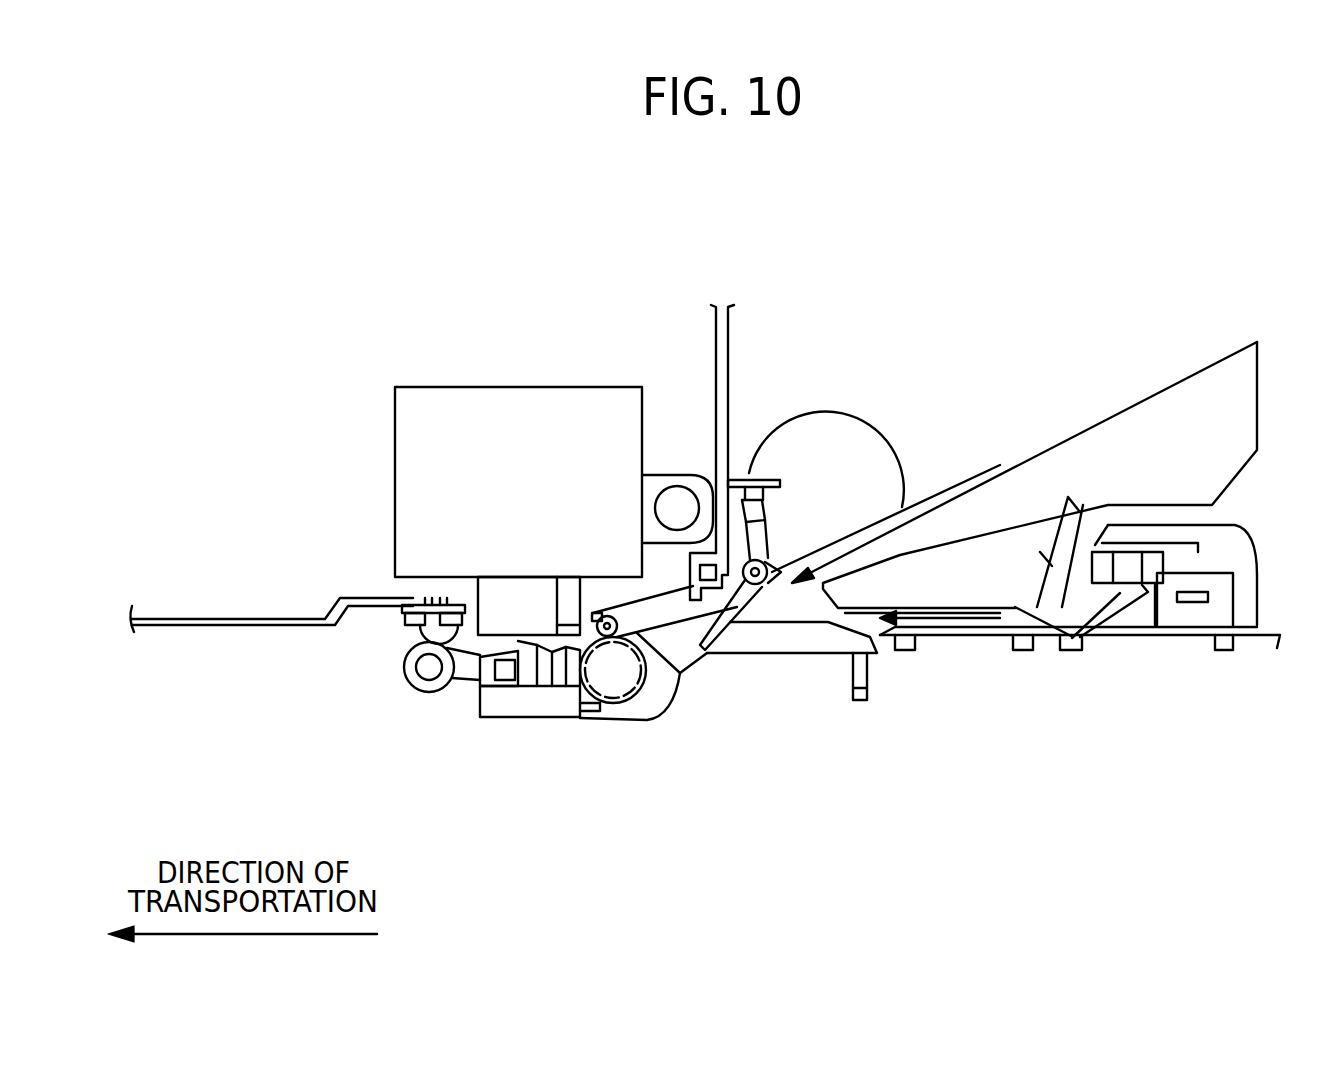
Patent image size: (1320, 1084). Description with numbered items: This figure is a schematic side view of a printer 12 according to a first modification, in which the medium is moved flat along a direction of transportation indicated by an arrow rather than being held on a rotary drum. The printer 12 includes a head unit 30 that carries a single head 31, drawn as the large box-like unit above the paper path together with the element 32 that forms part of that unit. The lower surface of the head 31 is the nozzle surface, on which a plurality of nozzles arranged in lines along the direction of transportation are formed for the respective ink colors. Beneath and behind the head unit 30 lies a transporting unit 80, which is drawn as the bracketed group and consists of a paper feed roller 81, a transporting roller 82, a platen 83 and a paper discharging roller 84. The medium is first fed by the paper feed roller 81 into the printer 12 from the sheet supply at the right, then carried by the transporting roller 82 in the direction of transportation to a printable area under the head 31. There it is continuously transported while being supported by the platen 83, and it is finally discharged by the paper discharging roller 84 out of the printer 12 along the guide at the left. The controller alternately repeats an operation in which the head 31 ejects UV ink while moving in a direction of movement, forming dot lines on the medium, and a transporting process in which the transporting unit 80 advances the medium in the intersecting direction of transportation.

The printer 12 is at (777, 308).
The head unit 30 is at (512, 446).
The head 31 is at (505, 592).
The transport motor housing 32 is at (488, 400).
The transporting unit 80 is at (592, 673).
The paper feed roller 81 is at (745, 644).
The transporting roller 82 is at (607, 680).
The platen 83 is at (529, 668).
The paper discharging roller 84 is at (428, 686).